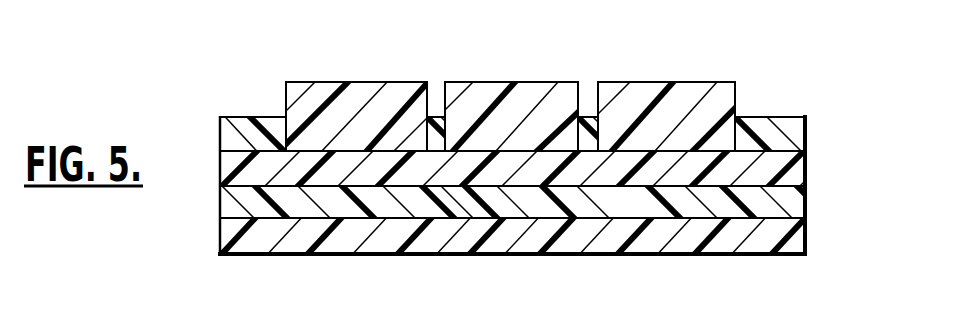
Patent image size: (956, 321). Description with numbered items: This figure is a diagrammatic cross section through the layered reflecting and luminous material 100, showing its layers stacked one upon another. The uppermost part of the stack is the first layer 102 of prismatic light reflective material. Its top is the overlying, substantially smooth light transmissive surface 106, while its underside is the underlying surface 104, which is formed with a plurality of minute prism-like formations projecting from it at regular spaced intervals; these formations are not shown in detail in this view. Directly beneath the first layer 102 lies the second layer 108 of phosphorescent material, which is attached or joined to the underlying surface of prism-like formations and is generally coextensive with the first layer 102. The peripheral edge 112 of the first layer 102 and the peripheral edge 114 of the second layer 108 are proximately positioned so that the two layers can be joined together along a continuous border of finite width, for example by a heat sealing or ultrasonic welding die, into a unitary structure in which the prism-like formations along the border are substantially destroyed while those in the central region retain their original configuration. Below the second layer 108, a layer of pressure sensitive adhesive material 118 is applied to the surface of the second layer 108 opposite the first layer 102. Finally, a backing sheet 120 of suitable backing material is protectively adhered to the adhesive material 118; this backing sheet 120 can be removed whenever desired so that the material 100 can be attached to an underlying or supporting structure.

The layered reflecting and luminous material 100 is at (702, 72).
The first layer 102 is at (807, 72).
The underlying surface 104 is at (510, 162).
The light transmissive surface 106 is at (336, 72).
The second layer 108 is at (825, 163).
The peripheral edge 112 is at (220, 136).
The peripheral edge 114 is at (220, 171).
The layer of pressure sensitive adhesive material 118 is at (825, 196).
The backing sheet 120 is at (825, 232).